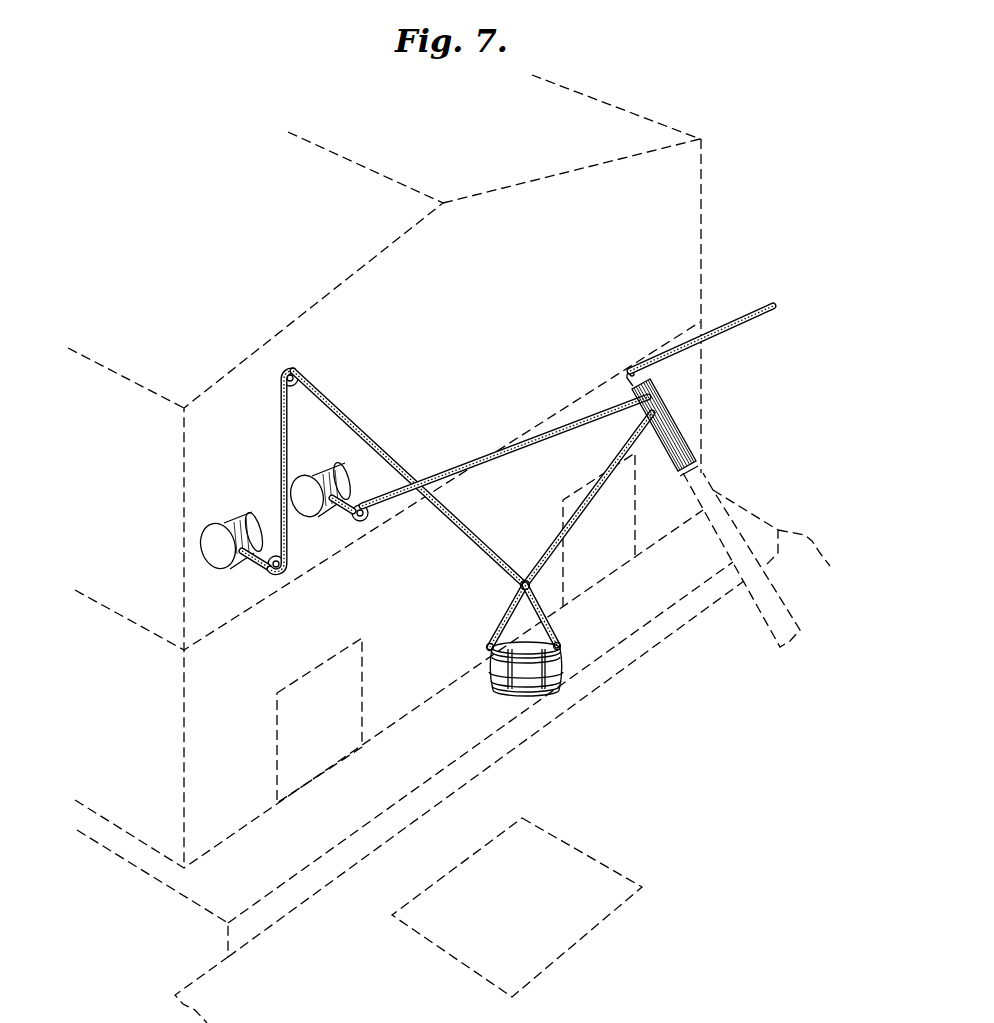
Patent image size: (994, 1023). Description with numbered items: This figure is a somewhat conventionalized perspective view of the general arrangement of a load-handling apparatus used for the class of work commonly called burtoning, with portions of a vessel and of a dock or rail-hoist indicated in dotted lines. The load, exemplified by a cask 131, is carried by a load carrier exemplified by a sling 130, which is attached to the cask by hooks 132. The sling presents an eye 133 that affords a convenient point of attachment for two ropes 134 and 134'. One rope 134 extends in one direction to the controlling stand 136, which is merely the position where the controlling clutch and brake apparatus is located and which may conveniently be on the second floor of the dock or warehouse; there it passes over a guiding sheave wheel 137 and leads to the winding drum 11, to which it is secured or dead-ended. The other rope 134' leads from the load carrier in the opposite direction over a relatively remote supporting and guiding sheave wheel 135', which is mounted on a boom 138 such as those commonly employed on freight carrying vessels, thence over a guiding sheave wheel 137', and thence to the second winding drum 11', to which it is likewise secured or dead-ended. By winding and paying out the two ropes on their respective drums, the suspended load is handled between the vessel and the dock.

The winding drum 11 is at (231, 535).
The second winding drum 11' is at (320, 482).
The sling 130 is at (512, 608).
The cask 131 is at (558, 667).
The hooks 132 is at (486, 647).
The eye 133 is at (525, 577).
The rope 134 is at (386, 478).
The rope 134' is at (507, 491).
The supporting and guiding sheave wheel 135' is at (700, 388).
The controlling stand 136 is at (283, 378).
The guiding sheave wheel 137 is at (263, 572).
The guiding sheave wheel 137' is at (361, 502).
The boom 138 is at (670, 462).